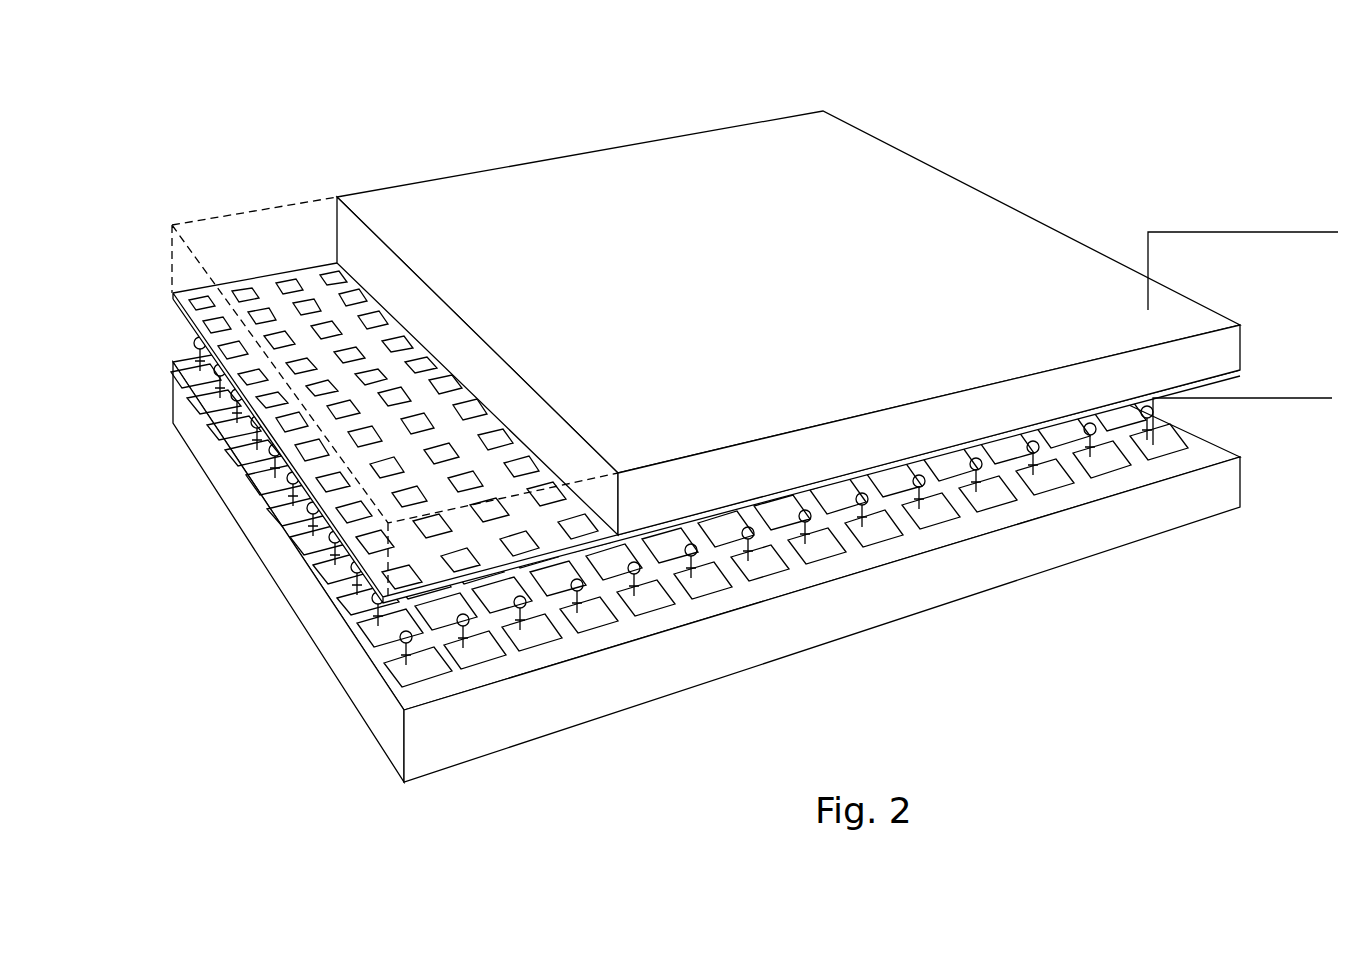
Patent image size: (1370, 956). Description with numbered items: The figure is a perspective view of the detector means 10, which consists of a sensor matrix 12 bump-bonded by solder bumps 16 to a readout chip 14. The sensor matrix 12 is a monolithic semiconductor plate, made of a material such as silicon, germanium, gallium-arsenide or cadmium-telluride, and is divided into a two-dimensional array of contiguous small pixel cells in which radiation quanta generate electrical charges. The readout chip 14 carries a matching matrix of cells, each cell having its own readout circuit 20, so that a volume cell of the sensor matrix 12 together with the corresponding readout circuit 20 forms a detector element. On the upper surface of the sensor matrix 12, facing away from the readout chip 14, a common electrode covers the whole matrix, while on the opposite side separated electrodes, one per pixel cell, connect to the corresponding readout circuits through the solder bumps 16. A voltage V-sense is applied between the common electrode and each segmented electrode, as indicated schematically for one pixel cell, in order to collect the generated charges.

The detector means 10 is at (718, 405).
The sensor matrix 12 is at (928, 195).
The readout chip 14 is at (273, 557).
The solder bumps 16 is at (175, 333).
The readout circuit 20 is at (428, 667).